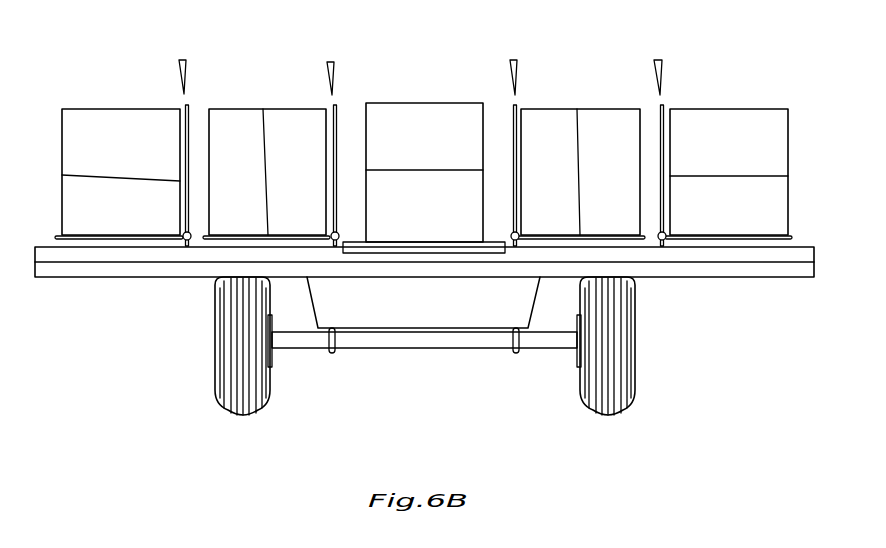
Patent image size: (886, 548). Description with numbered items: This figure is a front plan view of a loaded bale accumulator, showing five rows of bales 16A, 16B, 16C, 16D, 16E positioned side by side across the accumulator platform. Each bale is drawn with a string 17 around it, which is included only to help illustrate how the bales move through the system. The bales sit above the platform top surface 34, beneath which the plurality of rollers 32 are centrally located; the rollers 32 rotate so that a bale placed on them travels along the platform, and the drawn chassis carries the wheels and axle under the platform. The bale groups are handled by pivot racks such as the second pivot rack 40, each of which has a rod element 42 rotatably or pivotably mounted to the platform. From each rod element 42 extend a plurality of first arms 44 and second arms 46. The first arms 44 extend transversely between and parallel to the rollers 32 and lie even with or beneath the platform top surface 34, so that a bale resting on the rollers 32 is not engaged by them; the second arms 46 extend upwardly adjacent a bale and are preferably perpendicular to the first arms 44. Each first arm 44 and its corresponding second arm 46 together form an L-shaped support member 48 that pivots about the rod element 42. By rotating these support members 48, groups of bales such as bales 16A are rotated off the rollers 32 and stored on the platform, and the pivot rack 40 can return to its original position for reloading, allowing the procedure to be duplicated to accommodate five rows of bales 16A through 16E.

The second pivot rack 40 is at (146, 20).
The platform top surface 34 is at (48, 247).
The rollers 32 is at (493, 253).
The bales 16A is at (741, 109).
The bales 16B is at (133, 109).
The bales 16C is at (593, 109).
The bales 16D is at (281, 109).
The bales 16E is at (405, 103).
The string 17 is at (79, 175).
The second arms 46 is at (75, 235).
The first arms 44 is at (185, 162).
The rod element 42 is at (340, 237).
The L-shaped support members 48 is at (186, 61).